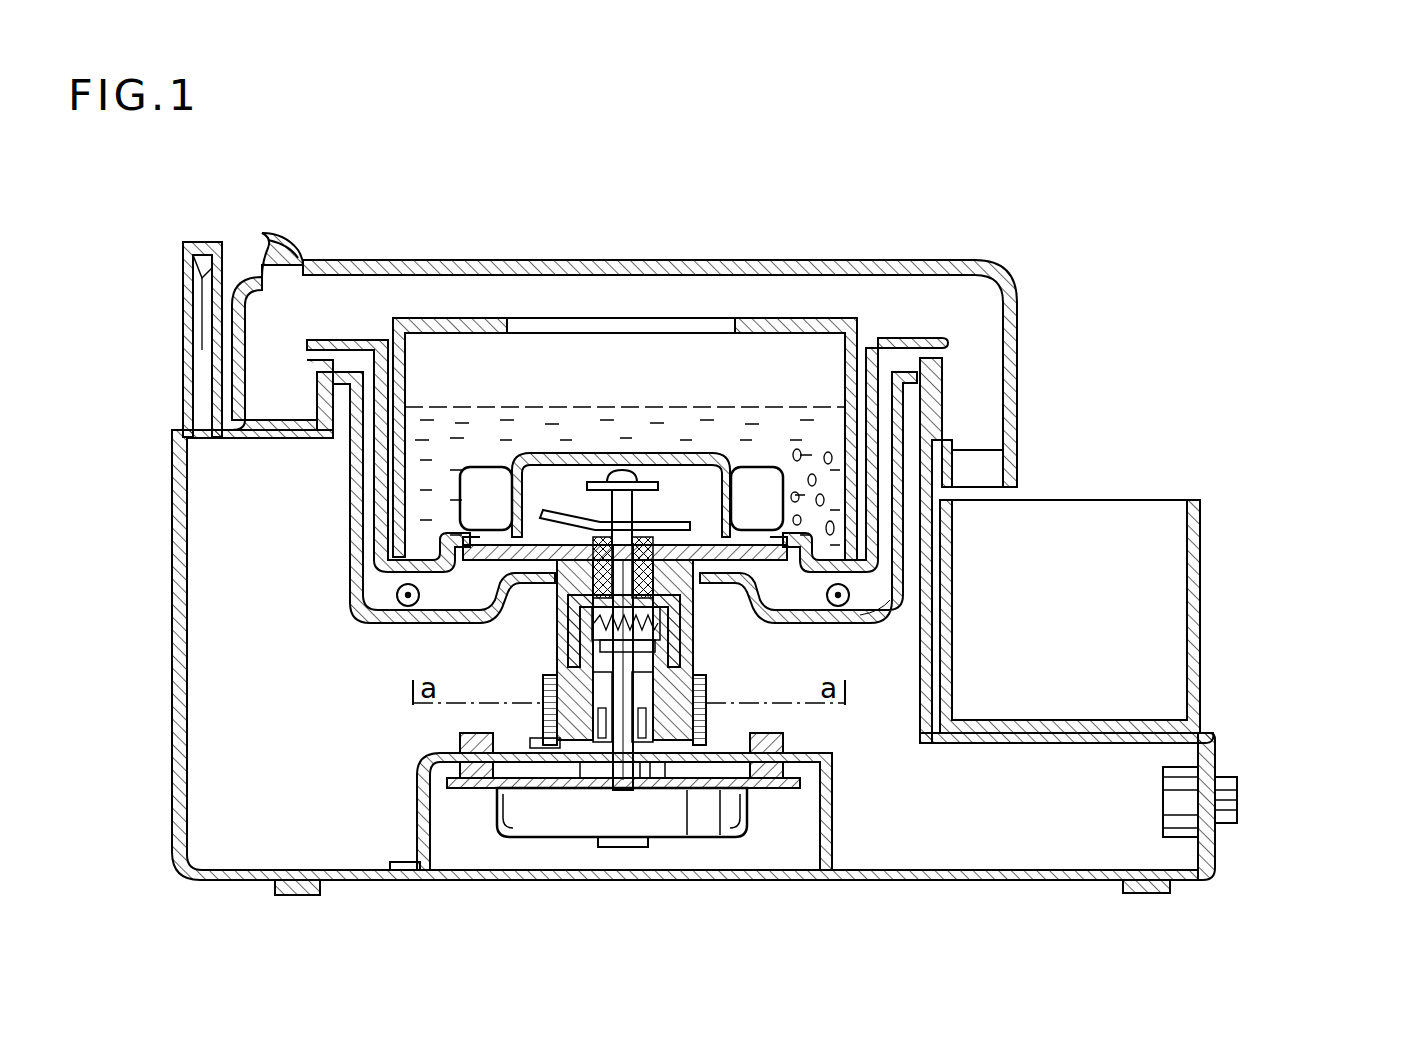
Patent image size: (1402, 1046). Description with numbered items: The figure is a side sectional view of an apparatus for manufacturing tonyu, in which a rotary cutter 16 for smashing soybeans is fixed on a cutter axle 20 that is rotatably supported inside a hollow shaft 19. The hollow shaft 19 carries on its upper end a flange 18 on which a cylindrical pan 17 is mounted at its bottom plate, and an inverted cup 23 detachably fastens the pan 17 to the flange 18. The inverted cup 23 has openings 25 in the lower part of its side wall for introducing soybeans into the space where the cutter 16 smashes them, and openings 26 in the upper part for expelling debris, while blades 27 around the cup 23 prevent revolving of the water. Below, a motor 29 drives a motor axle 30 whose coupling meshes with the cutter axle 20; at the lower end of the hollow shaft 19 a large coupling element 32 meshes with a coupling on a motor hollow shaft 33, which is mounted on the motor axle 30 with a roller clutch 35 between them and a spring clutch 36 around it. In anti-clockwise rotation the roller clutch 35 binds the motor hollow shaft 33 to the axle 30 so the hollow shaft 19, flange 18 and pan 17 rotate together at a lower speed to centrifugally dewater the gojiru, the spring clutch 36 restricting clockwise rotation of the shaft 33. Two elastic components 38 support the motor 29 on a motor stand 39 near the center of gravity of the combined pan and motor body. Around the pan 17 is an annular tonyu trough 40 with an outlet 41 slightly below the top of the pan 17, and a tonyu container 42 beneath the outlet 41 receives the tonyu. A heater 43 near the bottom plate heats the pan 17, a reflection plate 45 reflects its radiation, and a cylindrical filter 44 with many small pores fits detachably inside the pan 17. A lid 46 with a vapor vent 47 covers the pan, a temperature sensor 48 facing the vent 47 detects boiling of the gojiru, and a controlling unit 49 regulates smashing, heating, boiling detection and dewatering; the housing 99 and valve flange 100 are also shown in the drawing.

The rotary cutter 16 is at (668, 522).
The cylindrical pan 17 is at (930, 400).
The flange 18 is at (512, 620).
The hollow shaft 19 is at (667, 577).
The cutter axle 20 is at (555, 640).
The inverted cup 23 is at (680, 470).
The openings 25 is at (490, 503).
The openings 26 is at (515, 470).
The blades 27 is at (483, 498).
The motor 29 is at (665, 822).
The motor axle 30 is at (620, 780).
The large coupling element 32 is at (566, 646).
The motor hollow shaft 33 is at (690, 770).
The roller clutch 35 is at (545, 715).
The spring clutch 36 is at (706, 715).
The elastic components 38 is at (465, 778).
The motor stand 39 is at (828, 820).
The annular tonyu trough 40 is at (262, 392).
The outlet 41 is at (990, 470).
The tonyu container 42 is at (1168, 638).
The heater 43 is at (393, 593).
The cylindrical filter 44 is at (405, 352).
The reflection plate 45 is at (858, 627).
The lid 46 is at (690, 268).
The vapor vent 47 is at (272, 262).
The temperature sensor 48 is at (193, 240).
The controlling unit 49 is at (1178, 800).
The housing 99 is at (178, 788).
The valve flange 100 is at (750, 590).